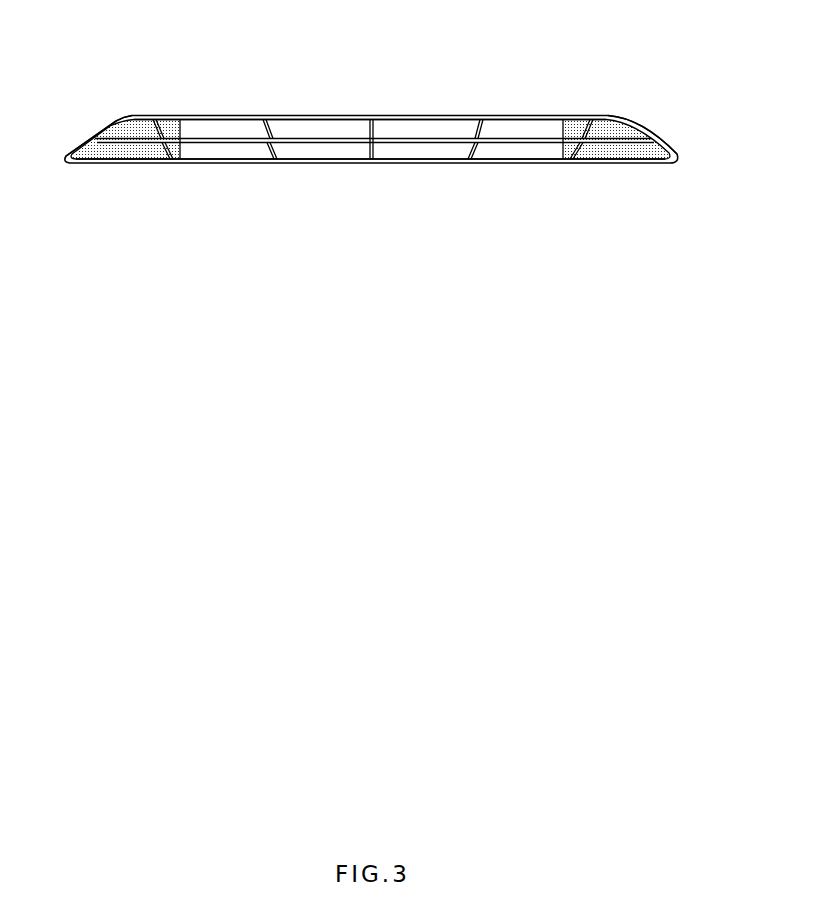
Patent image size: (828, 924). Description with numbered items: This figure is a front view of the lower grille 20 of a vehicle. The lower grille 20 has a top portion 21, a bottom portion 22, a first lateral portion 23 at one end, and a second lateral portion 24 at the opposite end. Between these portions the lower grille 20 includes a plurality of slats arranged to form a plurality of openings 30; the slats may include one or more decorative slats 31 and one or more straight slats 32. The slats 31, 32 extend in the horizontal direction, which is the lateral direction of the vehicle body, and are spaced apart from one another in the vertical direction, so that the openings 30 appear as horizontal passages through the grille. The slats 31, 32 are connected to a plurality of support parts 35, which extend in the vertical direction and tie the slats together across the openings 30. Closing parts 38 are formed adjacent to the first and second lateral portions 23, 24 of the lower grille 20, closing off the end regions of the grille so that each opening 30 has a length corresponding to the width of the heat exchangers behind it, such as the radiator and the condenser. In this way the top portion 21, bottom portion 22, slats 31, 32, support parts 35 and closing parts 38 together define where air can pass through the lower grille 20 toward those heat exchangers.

The lower grille 20 is at (134, 48).
The top portion 21 is at (331, 118).
The bottom portion 22 is at (355, 162).
The first lateral portion 23 is at (98, 137).
The second lateral portion 24 is at (645, 138).
The openings 30 is at (293, 128).
The decorative slats 31 is at (213, 133).
The straight slats 32 is at (374, 102).
The support parts 35 is at (264, 160).
The closing parts 38 is at (138, 117).